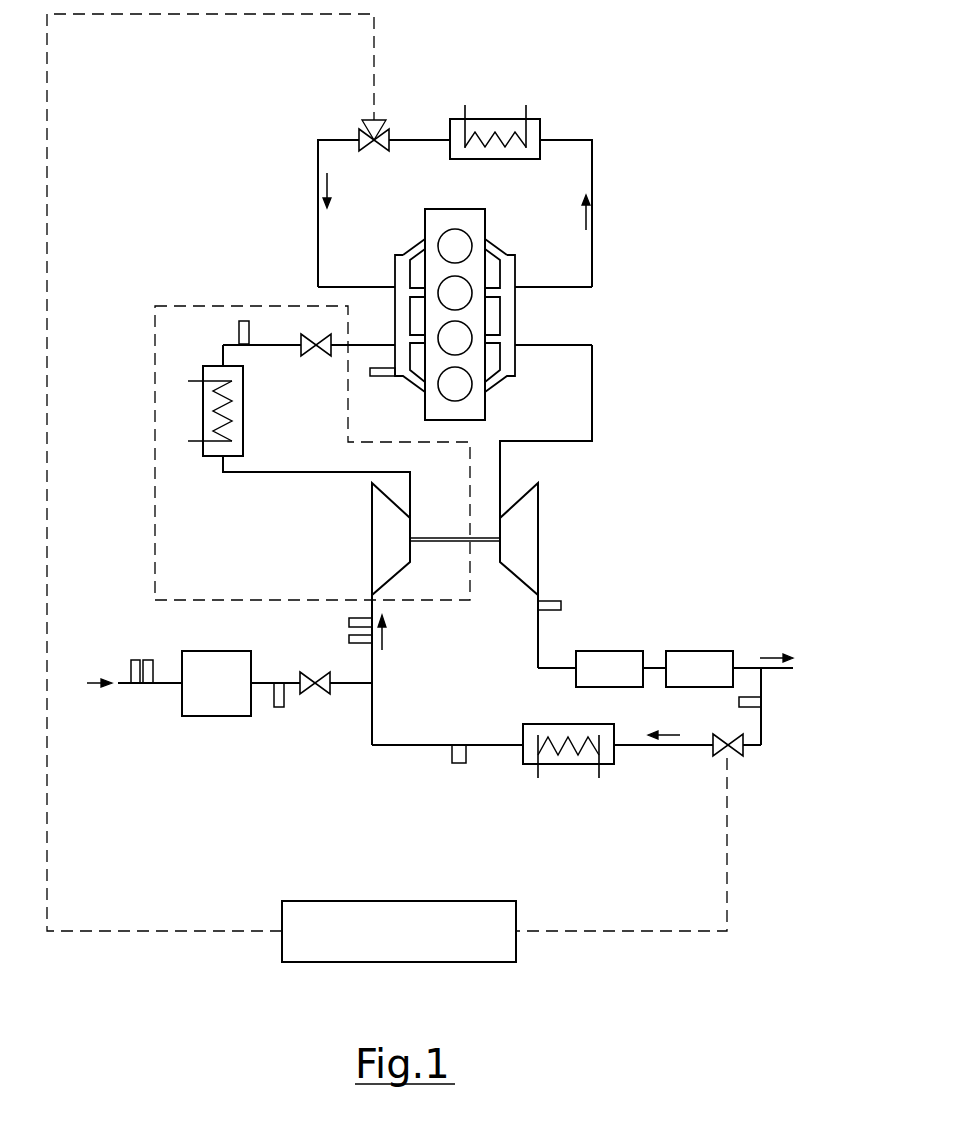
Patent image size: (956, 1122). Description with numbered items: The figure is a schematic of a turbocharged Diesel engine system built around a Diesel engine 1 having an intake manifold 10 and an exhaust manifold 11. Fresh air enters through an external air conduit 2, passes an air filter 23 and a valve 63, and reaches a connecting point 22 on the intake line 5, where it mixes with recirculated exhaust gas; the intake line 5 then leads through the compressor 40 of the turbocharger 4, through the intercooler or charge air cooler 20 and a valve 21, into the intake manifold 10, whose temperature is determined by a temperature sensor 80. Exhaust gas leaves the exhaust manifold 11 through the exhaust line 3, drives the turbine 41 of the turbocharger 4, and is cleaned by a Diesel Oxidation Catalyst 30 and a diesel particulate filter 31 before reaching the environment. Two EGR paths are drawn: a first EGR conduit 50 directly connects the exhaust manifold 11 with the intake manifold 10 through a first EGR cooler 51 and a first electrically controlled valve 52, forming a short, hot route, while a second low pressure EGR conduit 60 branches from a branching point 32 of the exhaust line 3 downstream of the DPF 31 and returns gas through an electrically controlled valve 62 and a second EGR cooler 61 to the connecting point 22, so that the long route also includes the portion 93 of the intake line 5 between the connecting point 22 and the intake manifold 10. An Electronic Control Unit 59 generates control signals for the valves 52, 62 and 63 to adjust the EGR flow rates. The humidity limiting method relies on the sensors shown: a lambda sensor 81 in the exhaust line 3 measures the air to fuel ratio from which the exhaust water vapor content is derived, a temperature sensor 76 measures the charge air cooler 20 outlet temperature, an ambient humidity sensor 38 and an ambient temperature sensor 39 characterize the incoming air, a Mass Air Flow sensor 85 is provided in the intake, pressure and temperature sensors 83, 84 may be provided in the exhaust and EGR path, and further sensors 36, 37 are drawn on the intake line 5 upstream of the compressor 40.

The Diesel engine 1 is at (515, 222).
The external air conduit 2 is at (160, 683).
The exhaust line 3 is at (592, 395).
The turbocharger 4 is at (563, 500).
The intake line 5 is at (270, 472).
The intake manifold 10 is at (400, 267).
The exhaust manifold 11 is at (508, 320).
The intercooler 20 is at (210, 456).
The valve 21 is at (303, 333).
The connecting point 22 is at (376, 687).
The air filter 23 is at (222, 665).
The Diesel Oxidation Catalyst 30 is at (625, 651).
The diesel particulate filter 31 is at (694, 651).
The branching point 32 is at (763, 675).
The pressure sensor 36 is at (349, 640).
The temperature sensor 37 is at (349, 622).
The ambient relative humidity sensor 38 is at (131, 666).
The ambient temperature sensor 39 is at (148, 660).
The compressor 40 is at (382, 550).
The turbine 41 is at (525, 560).
The first EGR conduit 50 is at (592, 218).
The first EGR cooler 51 is at (503, 120).
The first electrically controlled valve 52 is at (390, 128).
The Electronic Control Unit 59 is at (397, 901).
The second Low Pressure EGR conduit 60 is at (665, 748).
The second EGR cooler 61 is at (569, 764).
The electrically controlled valve 62 is at (733, 752).
The valve 63 is at (320, 695).
The temperature sensor 76 is at (218, 345).
The temperature sensor 80 is at (388, 376).
The lambda sensor 81 is at (550, 600).
The pressure sensor 83 is at (737, 702).
The temperature sensor 84 is at (457, 763).
The Mass Air Flow sensor 85 is at (282, 707).
The portion of the intake line 93 is at (155, 358).